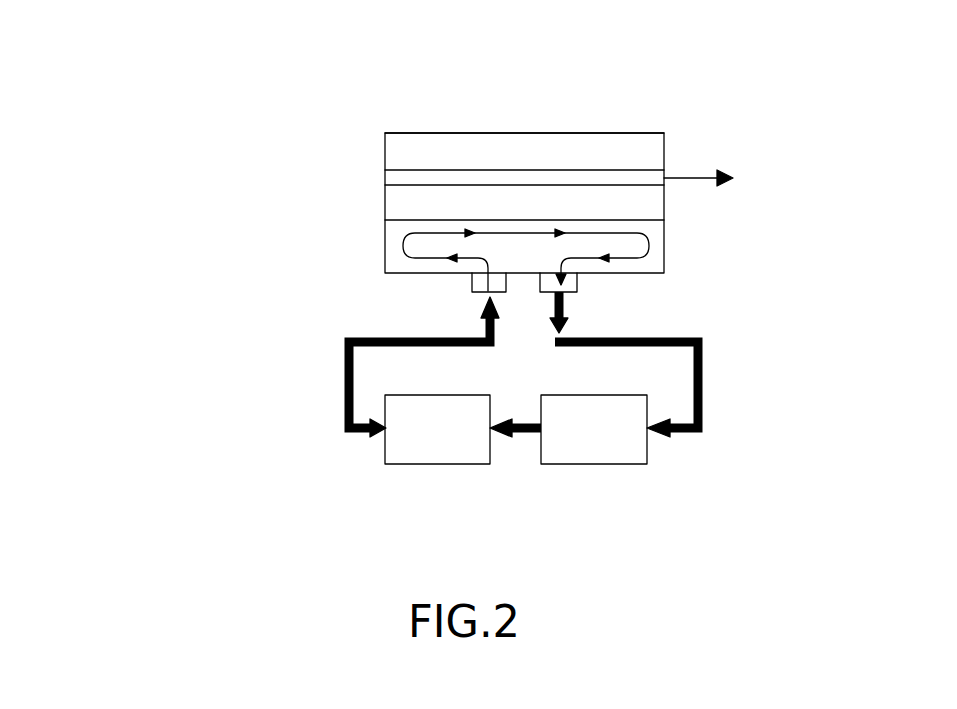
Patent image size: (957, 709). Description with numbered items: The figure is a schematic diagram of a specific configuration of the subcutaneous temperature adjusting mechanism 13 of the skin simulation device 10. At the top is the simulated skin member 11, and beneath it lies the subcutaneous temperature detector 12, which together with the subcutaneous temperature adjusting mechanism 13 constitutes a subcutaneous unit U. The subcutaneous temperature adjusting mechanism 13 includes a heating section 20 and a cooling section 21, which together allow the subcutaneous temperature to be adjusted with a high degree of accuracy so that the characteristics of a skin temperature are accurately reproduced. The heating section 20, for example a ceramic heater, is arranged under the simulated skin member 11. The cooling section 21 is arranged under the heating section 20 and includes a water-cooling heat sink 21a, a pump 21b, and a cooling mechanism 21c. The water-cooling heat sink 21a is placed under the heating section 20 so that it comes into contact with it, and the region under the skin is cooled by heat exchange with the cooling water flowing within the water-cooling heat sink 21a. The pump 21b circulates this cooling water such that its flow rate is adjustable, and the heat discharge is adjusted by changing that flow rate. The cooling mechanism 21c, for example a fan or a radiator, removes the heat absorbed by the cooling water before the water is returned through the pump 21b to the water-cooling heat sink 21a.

The skin simulation device 10 is at (742, 66).
The simulated skin member 11 is at (385, 153).
The subcutaneous temperature detector 12 is at (385, 178).
The subcutaneous temperature adjusting mechanism 13 is at (385, 185).
The heating section 20 is at (384, 200).
The cooling section 21 is at (385, 220).
The water-cooling heat sink 21a is at (383, 247).
The pump 21b is at (490, 464).
The cooling mechanism 21c is at (647, 464).
The subcutaneous unit U is at (385, 170).